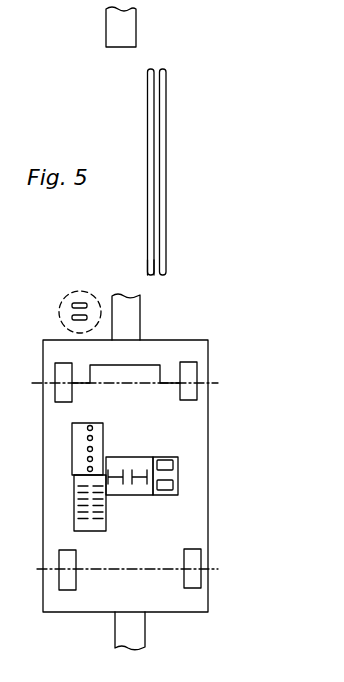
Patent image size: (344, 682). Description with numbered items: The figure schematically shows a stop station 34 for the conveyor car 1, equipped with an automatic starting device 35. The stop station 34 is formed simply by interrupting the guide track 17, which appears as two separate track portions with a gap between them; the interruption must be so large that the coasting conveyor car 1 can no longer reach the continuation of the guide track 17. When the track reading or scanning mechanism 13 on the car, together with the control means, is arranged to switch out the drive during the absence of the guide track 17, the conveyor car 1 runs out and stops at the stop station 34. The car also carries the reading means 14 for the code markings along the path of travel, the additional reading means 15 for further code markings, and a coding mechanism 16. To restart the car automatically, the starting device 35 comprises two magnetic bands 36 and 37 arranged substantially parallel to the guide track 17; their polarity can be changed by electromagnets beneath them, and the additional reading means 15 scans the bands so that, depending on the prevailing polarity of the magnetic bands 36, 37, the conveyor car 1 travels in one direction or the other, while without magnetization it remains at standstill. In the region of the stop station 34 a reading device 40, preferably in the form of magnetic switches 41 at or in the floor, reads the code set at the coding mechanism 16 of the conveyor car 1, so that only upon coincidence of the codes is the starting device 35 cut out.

The conveyor car 1 is at (40, 433).
The track reading or scanning mechanism 13 is at (125, 466).
The reading means for the code markings 14 is at (75, 506).
The additional reading means 15 is at (168, 459).
The coding mechanism 16 is at (81, 451).
The guide track 17 is at (135, 313).
The stop station 34 is at (160, 172).
The starting device 35 is at (144, 230).
The magnetic band 36 is at (167, 106).
The magnetic band 37 is at (147, 107).
The reading device 40 is at (73, 290).
The magnetic switches 41 is at (72, 317).